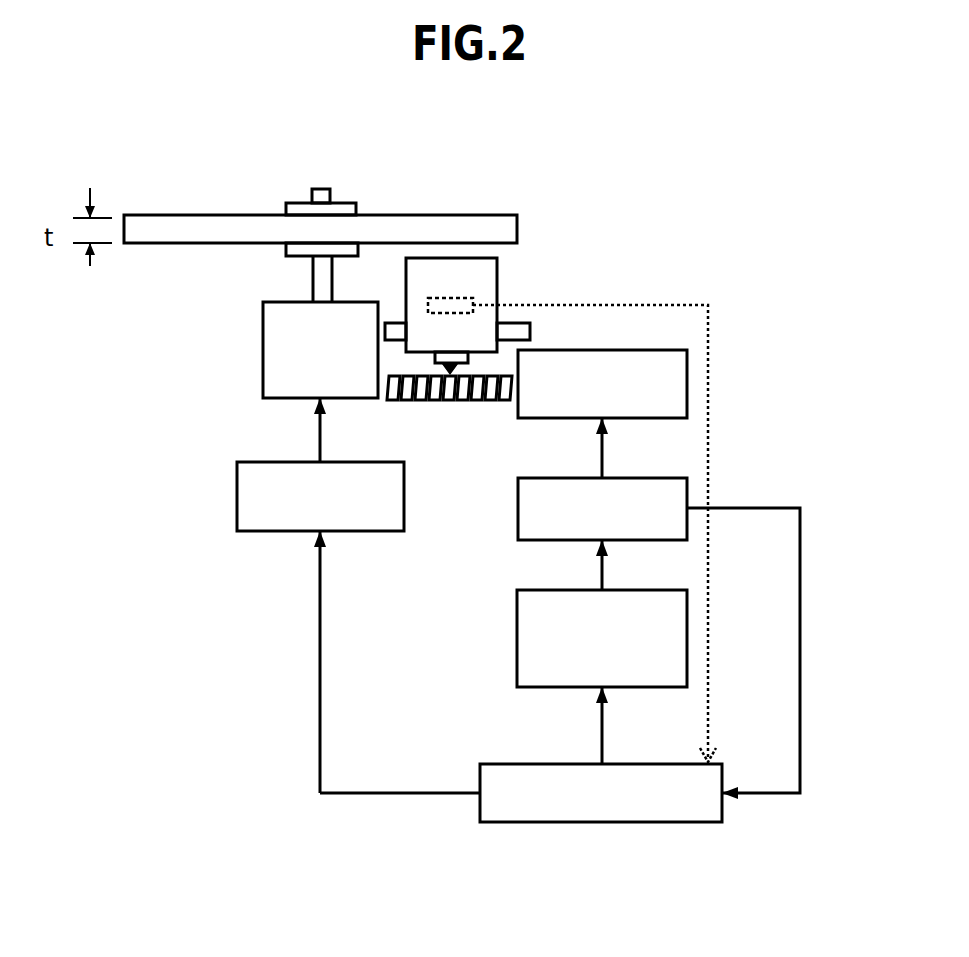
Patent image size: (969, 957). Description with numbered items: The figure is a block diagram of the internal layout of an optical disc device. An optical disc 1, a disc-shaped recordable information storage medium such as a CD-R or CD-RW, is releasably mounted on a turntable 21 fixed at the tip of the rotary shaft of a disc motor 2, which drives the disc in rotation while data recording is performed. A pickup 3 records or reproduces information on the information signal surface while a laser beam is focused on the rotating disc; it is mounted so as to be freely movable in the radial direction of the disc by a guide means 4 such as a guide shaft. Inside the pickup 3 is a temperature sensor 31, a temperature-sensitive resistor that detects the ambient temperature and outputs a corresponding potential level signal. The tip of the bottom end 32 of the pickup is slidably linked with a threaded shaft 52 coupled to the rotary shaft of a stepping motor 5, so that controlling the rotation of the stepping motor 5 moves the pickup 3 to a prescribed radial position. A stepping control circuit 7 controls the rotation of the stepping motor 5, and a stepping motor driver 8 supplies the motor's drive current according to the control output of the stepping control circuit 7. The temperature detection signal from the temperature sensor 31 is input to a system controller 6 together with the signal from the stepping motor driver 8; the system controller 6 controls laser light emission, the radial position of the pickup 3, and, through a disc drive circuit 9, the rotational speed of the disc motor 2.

The optical disc 1 is at (252, 222).
The turntable 21 is at (283, 247).
The disc motor 2 is at (262, 346).
The pickup 3 is at (485, 265).
The temperature sensor 31 is at (468, 305).
The guide means 4 is at (510, 332).
The bottom end of pickup 32 is at (432, 356).
The lead screw 52 is at (462, 401).
The stepping motor 5 is at (688, 381).
The stepping motor driver 8 is at (688, 493).
The stepping control circuit 7 is at (515, 641).
The system controller 6 is at (478, 772).
The disc drive circuit 9 is at (237, 514).